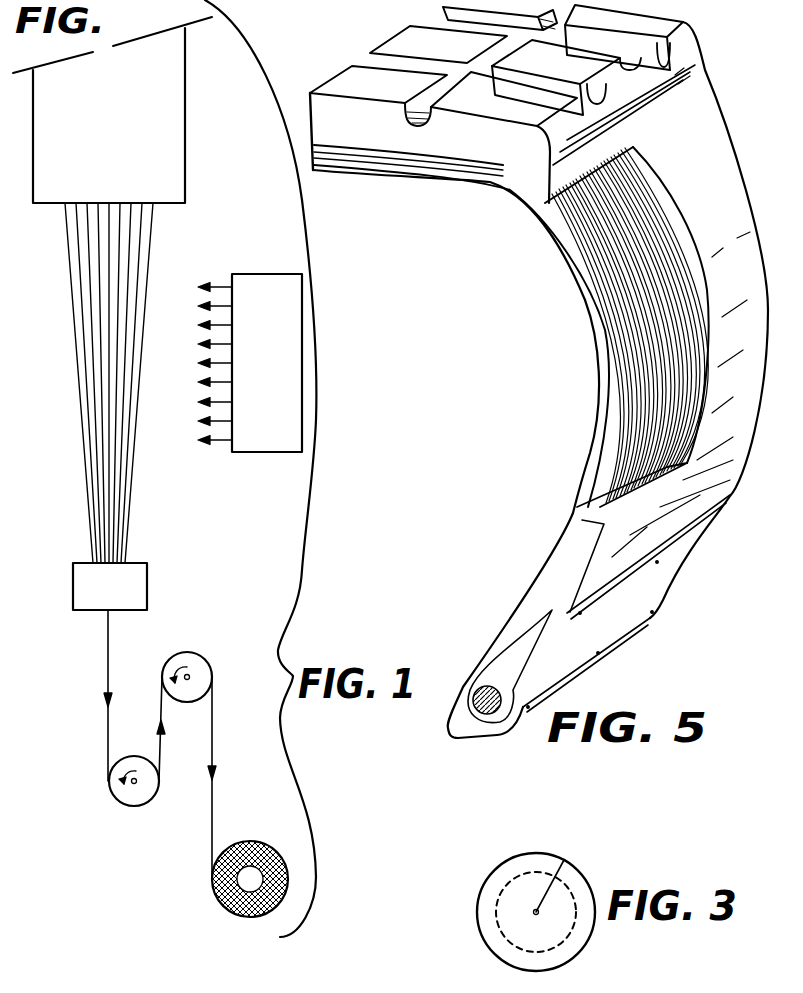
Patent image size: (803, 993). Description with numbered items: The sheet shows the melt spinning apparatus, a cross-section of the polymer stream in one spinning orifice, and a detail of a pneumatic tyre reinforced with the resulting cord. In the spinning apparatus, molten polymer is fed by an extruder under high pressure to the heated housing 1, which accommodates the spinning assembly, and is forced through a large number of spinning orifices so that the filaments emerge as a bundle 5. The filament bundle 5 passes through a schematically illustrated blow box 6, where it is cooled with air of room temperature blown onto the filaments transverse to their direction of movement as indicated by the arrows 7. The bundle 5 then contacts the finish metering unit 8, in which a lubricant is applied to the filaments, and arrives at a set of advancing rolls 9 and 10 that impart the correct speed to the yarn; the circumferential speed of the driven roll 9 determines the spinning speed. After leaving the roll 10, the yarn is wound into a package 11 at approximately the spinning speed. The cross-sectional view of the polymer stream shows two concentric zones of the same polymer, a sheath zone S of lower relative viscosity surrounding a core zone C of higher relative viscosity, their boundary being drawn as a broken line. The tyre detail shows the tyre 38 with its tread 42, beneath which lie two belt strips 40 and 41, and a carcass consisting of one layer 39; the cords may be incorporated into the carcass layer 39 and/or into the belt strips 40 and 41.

In FIG. 1, the heated housing 1 is at (187, 122).
In FIG. 1, the filament bundle 5 is at (102, 333).
In FIG. 1, the blow box 6 is at (242, 351).
In FIG. 1, the arrows 7 is at (218, 441).
In FIG. 1, the finish metering unit 8 is at (148, 592).
In FIG. 1, the driven advancing roll 9 is at (124, 806).
In FIG. 1, the advancing roll 10 is at (204, 658).
In FIG. 1, the package 11 is at (258, 843).
In FIG. 5, the tyre 38 is at (325, 74).
In FIG. 5, the carcass layer 39 is at (494, 183).
In FIG. 5, the belt strip 40 is at (481, 160).
In FIG. 5, the belt strip 41 is at (416, 167).
In FIG. 5, the tread 42 is at (430, 42).
In FIG. 3, the sheath polymer zone s is at (500, 866).
In FIG. 3, the core polymer zone c is at (564, 860).